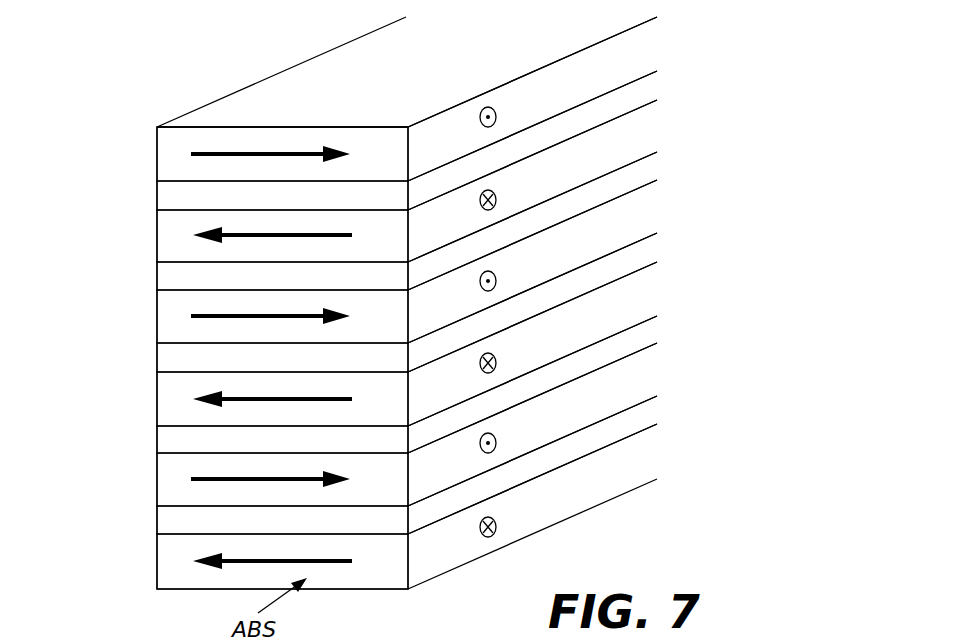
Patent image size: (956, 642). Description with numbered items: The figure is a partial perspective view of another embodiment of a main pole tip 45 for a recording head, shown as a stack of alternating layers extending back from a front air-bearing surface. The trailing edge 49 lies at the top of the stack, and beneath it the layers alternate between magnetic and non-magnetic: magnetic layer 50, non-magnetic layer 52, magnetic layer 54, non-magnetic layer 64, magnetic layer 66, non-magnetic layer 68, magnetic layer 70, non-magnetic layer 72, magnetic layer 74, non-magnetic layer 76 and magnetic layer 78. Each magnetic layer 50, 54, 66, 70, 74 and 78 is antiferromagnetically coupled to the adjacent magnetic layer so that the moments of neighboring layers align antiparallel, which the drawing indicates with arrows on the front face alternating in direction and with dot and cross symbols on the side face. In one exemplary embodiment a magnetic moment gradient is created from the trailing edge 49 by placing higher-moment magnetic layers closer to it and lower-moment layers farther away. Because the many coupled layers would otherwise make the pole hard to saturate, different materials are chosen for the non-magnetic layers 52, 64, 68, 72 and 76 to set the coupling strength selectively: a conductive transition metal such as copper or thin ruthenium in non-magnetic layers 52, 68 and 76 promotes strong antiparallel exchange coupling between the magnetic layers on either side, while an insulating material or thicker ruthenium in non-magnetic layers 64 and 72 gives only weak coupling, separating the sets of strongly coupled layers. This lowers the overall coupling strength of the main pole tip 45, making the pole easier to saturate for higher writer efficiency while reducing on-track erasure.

The main pole tip 45 is at (142, 62).
The trailing edge 49 is at (346, 127).
The magnetic layer 50 is at (163, 157).
The non-magnetic layer 52 is at (165, 200).
The magnetic layer 54 is at (175, 251).
The non-magnetic layer 64 is at (170, 280).
The magnetic layer 66 is at (160, 320).
The non-magnetic layer 68 is at (168, 361).
The magnetic layer 70 is at (170, 404).
The non-magnetic layer 72 is at (166, 442).
The magnetic layer 74 is at (172, 478).
The non-magnetic layer 76 is at (163, 520).
The magnetic layer 78 is at (175, 565).